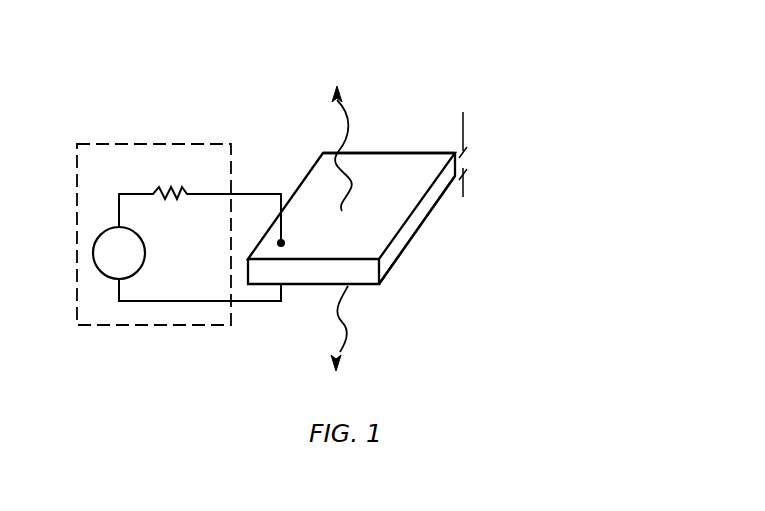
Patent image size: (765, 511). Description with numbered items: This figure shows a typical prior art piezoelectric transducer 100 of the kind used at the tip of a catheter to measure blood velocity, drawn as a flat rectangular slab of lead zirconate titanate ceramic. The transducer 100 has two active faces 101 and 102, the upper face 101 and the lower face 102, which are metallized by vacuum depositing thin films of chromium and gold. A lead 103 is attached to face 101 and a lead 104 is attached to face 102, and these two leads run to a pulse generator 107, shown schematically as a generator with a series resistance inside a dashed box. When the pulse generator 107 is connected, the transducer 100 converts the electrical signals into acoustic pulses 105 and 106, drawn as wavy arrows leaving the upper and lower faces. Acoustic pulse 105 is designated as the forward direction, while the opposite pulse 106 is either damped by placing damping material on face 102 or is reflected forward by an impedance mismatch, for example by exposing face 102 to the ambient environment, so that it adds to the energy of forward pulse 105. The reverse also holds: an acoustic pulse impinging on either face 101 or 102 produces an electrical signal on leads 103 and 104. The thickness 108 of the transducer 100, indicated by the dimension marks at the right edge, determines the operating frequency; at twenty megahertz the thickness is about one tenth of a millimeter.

The transducer 100 is at (398, 262).
The active face 101 is at (368, 187).
The active face 102 is at (422, 222).
The lead 103 is at (240, 193).
The lead 104 is at (240, 302).
The acoustic pulse 105 is at (341, 137).
The acoustic pulse 106 is at (338, 341).
The pulse generator 107 is at (79, 143).
The thickness 108 is at (460, 160).